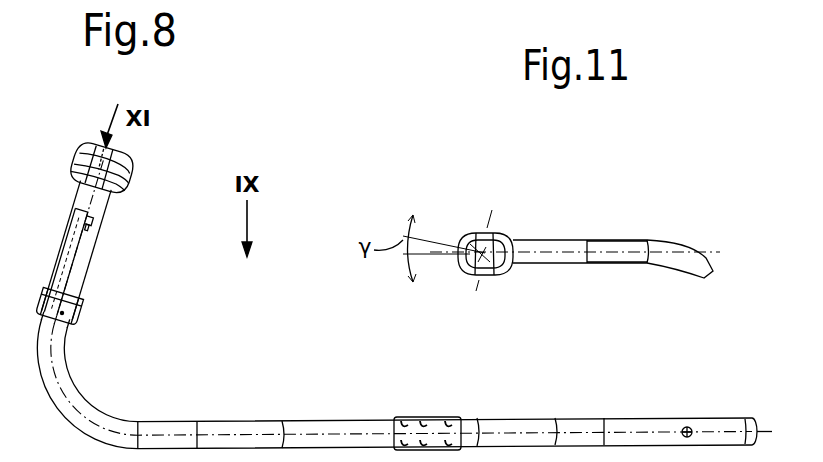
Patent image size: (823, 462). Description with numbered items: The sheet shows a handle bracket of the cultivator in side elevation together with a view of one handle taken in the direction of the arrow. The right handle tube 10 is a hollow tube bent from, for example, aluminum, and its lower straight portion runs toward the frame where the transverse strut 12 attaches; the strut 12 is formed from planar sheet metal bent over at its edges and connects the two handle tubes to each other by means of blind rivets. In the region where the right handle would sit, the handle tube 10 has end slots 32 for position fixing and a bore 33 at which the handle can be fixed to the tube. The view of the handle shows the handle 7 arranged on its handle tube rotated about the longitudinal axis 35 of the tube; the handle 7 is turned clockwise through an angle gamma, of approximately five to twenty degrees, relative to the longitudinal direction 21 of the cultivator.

In FIG. 8, the left handle 7 is at (102, 211).
In FIG. 11, the left handle 7 is at (497, 231).
In FIG. 8, the end slots 32 is at (93, 226).
In FIG. 8, the bore 33 is at (62, 313).
In FIG. 8, the right handle tube 10 is at (170, 427).
In FIG. 8, the transverse strut 12 is at (433, 418).
In FIG. 11, the longitudinal axis 35 is at (480, 252).
In FIG. 11, the longitudinal direction 21 is at (604, 250).